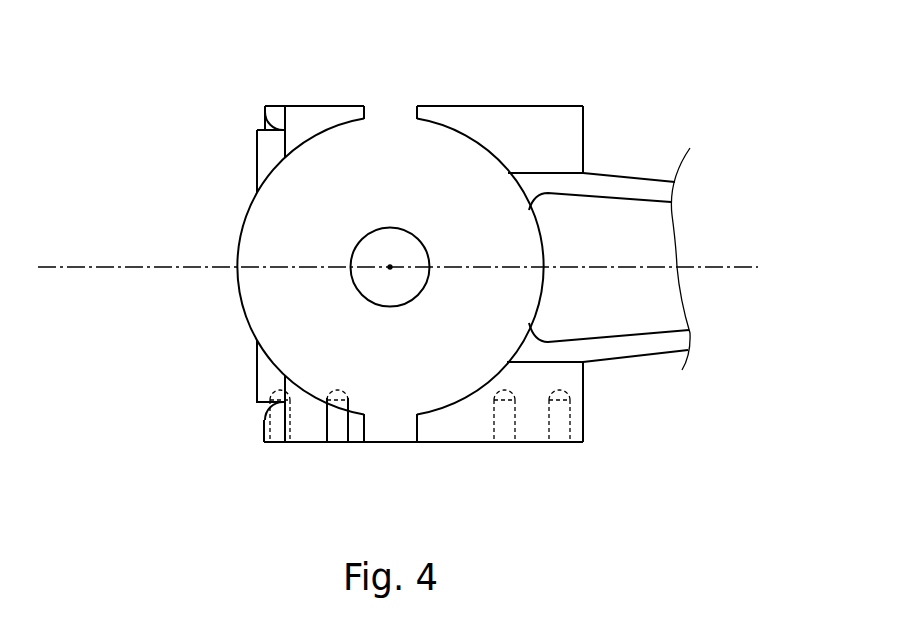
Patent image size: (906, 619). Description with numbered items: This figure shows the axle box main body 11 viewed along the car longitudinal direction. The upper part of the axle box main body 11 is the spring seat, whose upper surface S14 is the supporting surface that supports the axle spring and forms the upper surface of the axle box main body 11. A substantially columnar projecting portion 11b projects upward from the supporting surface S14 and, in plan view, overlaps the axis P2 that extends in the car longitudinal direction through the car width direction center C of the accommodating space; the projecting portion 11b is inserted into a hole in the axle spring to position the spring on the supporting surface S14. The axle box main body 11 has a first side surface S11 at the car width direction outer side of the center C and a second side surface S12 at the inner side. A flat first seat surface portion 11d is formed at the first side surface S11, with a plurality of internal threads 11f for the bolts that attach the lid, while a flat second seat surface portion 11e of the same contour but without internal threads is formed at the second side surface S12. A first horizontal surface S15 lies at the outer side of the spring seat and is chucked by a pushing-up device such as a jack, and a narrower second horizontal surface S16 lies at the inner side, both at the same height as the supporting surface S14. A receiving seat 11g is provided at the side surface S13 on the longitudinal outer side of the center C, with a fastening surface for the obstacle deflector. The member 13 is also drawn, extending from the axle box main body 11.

The axle box main body 11 is at (583, 122).
The projecting portion 11b is at (393, 245).
The first seat surface portion 11d is at (337, 443).
The second seat surface portion 11e is at (338, 103).
The internal threads 11f is at (314, 430).
The receiving seat 11g is at (266, 152).
The arm 13 is at (650, 187).
The car width direction center of the accommodating space C is at (390, 268).
The axis P2 is at (83, 267).
The first side surface S11 is at (466, 443).
The second side surface S12 is at (538, 105).
The side surface S13 is at (265, 110).
The upper surface of the spring seat S14 is at (462, 137).
The first horizontal surface S15 is at (398, 435).
The second horizontal surface S16 is at (400, 113).